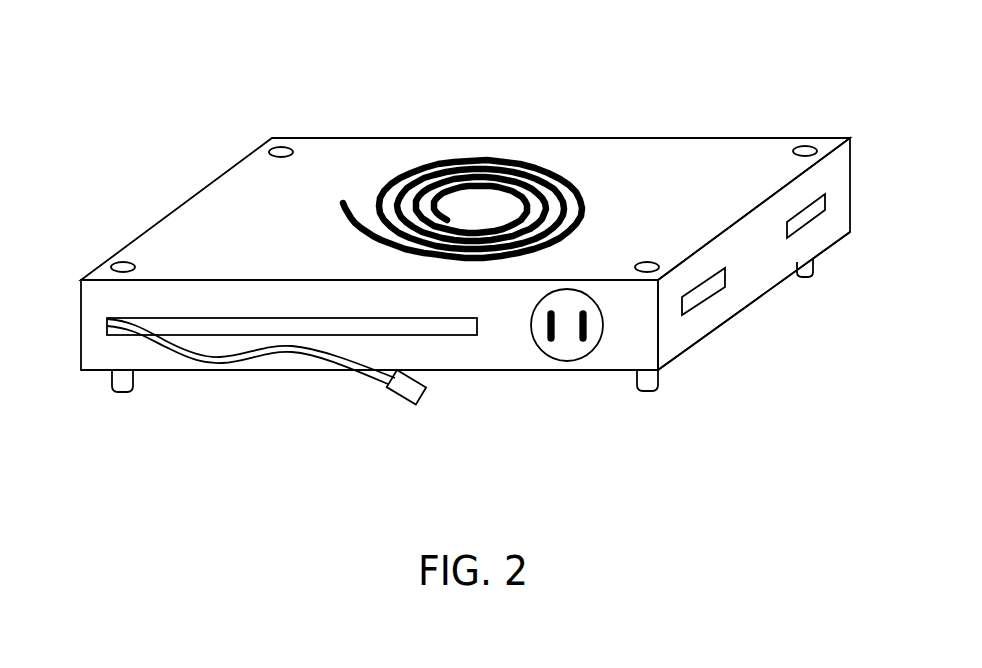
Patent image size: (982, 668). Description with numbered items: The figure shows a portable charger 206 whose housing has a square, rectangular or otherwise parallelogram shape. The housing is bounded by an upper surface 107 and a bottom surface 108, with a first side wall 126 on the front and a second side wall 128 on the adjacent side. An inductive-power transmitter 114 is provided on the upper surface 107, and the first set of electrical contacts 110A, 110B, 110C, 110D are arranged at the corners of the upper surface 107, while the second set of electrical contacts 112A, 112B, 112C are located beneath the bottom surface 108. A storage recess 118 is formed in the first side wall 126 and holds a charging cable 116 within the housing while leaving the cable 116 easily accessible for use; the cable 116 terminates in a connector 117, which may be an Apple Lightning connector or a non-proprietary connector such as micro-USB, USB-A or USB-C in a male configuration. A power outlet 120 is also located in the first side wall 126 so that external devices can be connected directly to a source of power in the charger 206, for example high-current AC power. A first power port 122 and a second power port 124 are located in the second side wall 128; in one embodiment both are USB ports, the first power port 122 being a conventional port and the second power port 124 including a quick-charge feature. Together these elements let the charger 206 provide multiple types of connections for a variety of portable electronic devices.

The portable charger 206 is at (697, 50).
The upper surface 107 is at (630, 185).
The inductive-power transmitter 114 is at (472, 153).
The first set of electrical contacts 110A is at (275, 148).
The first set of electrical contacts 110B is at (120, 262).
The first set of electrical contacts 110C is at (803, 146).
The first set of electrical contacts 110D is at (660, 262).
The charging cable 116 is at (262, 356).
The storage recess 118 is at (220, 335).
The connector 117 is at (388, 395).
The power outlet 120 is at (568, 362).
The first side wall 126 is at (465, 358).
The bottom surface 108 is at (519, 381).
The second set of electrical contacts 112A is at (122, 392).
The second set of electrical contacts 112B is at (645, 392).
The second set of electrical contacts 112C is at (807, 278).
The first power port 122 is at (695, 307).
The second power port 124 is at (818, 213).
The second side wall 128 is at (747, 288).